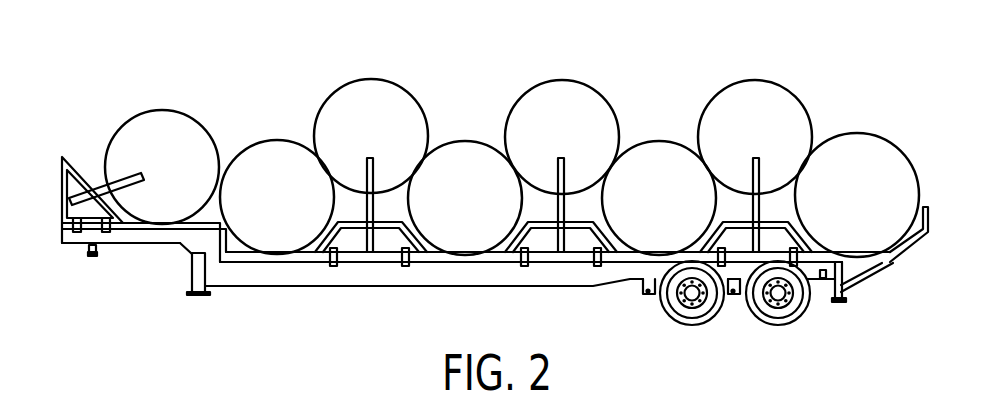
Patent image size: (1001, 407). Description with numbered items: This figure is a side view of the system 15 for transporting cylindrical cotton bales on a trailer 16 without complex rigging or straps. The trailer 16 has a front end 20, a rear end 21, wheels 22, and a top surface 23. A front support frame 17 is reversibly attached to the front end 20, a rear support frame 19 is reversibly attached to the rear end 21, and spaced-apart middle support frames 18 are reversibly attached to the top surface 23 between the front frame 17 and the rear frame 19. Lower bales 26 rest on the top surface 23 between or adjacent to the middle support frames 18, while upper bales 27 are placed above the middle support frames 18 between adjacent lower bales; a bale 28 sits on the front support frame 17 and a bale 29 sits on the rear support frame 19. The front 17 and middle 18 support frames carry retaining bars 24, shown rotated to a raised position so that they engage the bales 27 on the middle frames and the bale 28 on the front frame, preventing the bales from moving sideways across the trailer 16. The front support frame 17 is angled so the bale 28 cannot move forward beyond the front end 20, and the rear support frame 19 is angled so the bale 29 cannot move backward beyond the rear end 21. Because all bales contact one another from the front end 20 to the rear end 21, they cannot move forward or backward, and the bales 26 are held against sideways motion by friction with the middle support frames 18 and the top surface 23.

The system 15 is at (185, 50).
The trailer 16 is at (265, 273).
The front support frame 17 is at (63, 197).
The middle support frames 18 is at (347, 242).
The rear support frame 19 is at (908, 243).
The front end 20 is at (79, 237).
The rear end 21 is at (823, 279).
The wheels 22 is at (688, 327).
The top surface 23 is at (425, 261).
The retaining bars 24 is at (126, 219).
The bales 26 is at (278, 140).
The bales 27 is at (373, 79).
The bale 28 is at (157, 110).
The bale 29 is at (852, 133).